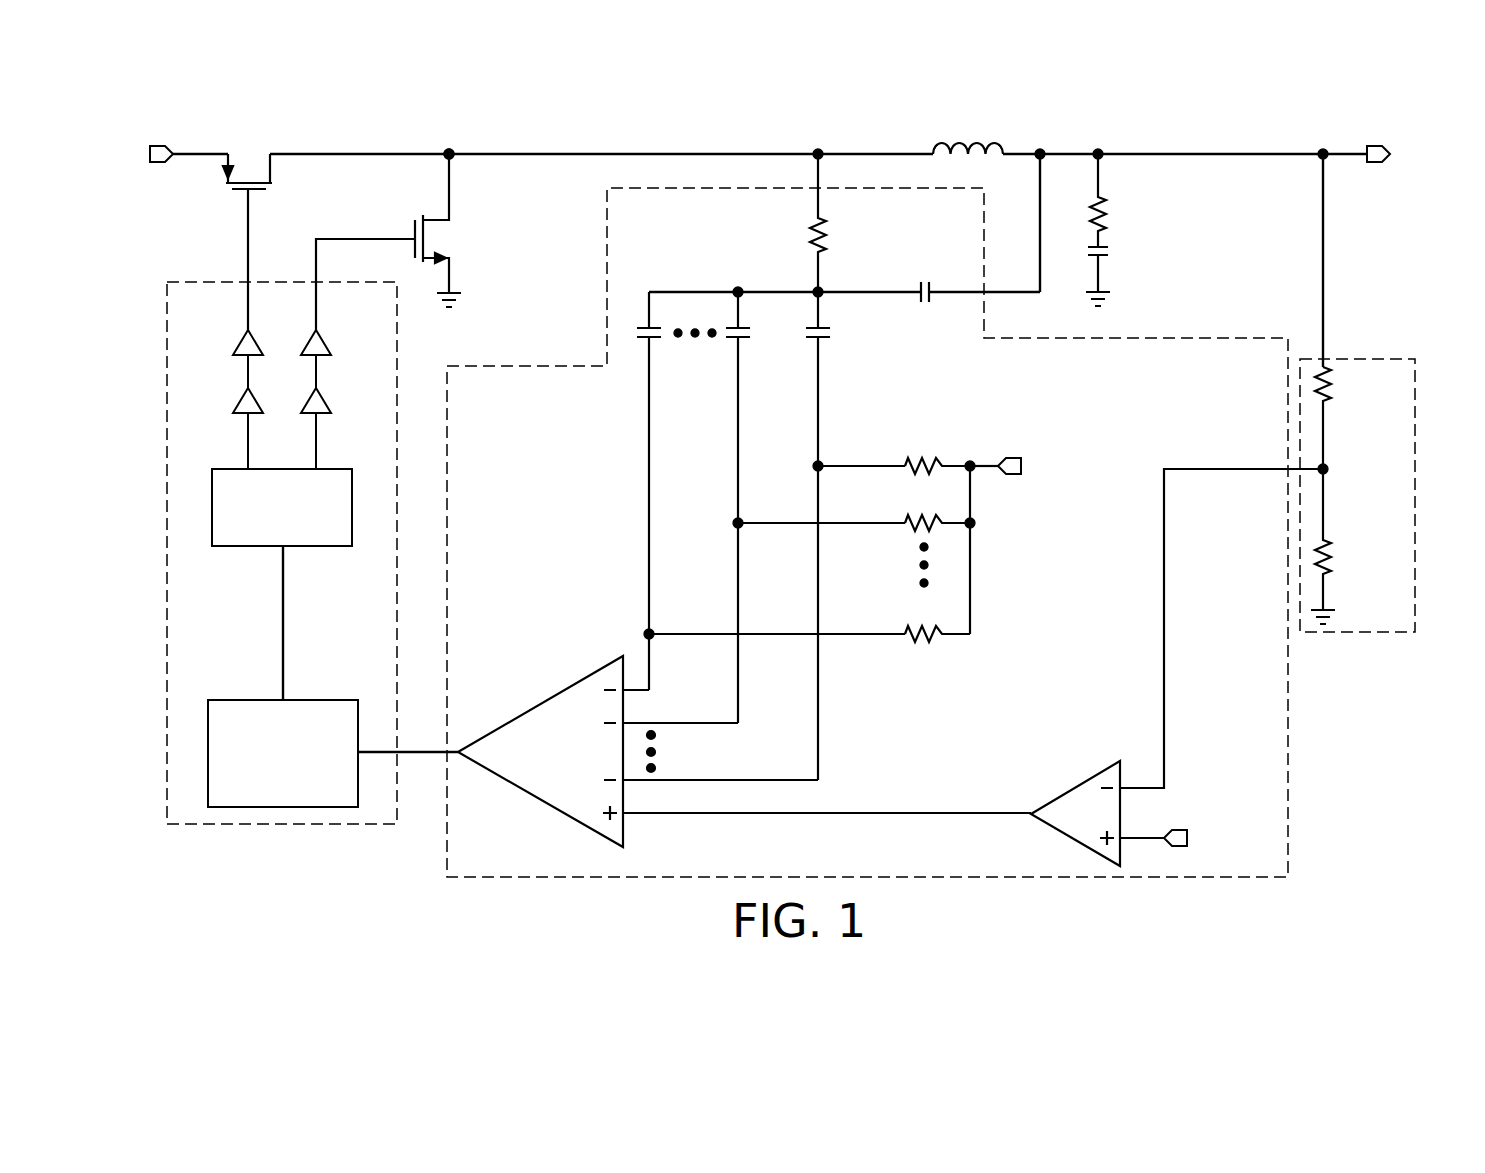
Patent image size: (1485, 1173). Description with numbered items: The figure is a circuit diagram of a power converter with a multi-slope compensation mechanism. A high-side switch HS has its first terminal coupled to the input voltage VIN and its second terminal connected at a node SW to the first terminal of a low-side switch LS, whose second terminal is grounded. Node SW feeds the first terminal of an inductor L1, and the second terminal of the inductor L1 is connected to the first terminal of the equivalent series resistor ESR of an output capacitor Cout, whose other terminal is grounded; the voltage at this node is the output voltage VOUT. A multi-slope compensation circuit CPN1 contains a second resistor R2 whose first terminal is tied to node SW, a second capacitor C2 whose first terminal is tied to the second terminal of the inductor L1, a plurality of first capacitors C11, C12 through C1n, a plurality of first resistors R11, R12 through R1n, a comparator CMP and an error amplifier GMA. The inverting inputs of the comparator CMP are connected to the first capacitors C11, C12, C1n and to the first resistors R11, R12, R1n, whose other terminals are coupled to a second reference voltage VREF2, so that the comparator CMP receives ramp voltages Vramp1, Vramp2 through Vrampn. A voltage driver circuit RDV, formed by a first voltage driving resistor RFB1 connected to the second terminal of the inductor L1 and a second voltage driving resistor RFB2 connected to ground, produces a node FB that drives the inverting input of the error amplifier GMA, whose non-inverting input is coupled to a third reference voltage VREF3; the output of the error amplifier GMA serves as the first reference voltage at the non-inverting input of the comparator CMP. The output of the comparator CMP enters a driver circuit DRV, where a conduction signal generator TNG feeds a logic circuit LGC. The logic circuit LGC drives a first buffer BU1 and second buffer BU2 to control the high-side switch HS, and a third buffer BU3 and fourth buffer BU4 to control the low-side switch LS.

The input voltage VIN is at (135, 154).
The output voltage VOUT is at (1417, 154).
The high-side switch HS is at (247, 226).
The low-side switch LS is at (399, 242).
The node SW is at (449, 140).
The inductor L1 is at (968, 132).
The equivalent series resistor ESR is at (1128, 200).
The output capacitor Cout is at (1128, 276).
The second resistor R2 is at (839, 223).
The second capacitor C2 is at (922, 276).
The first capacitor C11 is at (839, 536).
The first capacitor C12 is at (760, 507).
The first capacitor C1n is at (671, 491).
The first resistor R11 is at (936, 449).
The first resistor R12 is at (936, 506).
The first resistor R1n is at (936, 617).
The ramp voltage Vramp1 is at (859, 454).
The ramp voltage Vramp2 is at (819, 511).
The ramp voltage Vrampn is at (774, 622).
The second reference voltage VREF2 is at (1040, 466).
The third reference voltage VREF3 is at (1220, 838).
The comparator CMP is at (540, 703).
The error amplifier GMA is at (1075, 787).
The multi-slope compensation circuit CPN1 is at (1290, 752).
The voltage driver circuit RDV is at (1356, 359).
The first voltage driving resistor RFB1 is at (1360, 418).
The second voltage driving resistor RFB2 is at (1358, 546).
The node FB is at (1343, 469).
The driver circuit DRV is at (261, 824).
The logic circuit LGC is at (231, 546).
The conduction signal generator TNG is at (332, 700).
The first buffer BU1 is at (241, 398).
The second buffer BU2 is at (241, 340).
The third buffer BU3 is at (322, 398).
The fourth buffer BU4 is at (360, 320).